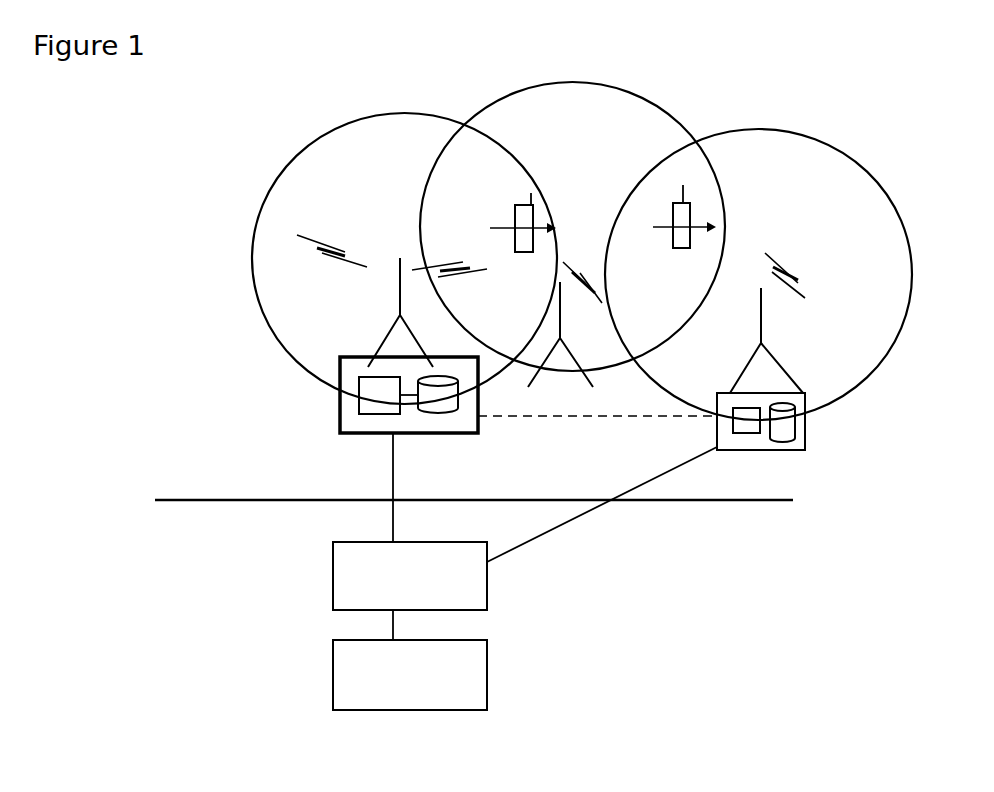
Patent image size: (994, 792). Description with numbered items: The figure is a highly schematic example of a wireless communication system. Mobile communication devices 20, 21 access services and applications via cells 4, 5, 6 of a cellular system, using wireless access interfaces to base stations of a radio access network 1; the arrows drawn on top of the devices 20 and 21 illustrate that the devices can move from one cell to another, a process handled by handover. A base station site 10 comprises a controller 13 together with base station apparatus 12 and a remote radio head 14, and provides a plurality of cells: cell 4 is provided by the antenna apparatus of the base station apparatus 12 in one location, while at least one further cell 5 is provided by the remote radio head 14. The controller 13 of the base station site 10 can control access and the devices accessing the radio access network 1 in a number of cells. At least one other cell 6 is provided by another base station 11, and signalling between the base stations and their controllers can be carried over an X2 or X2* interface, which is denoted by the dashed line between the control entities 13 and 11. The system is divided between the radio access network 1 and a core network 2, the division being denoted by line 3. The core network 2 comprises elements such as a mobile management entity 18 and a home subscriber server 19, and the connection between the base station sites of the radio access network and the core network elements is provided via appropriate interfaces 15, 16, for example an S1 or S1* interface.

The radio access network 1 is at (217, 228).
The core network 2 is at (768, 592).
The line 3 is at (793, 500).
The cell 4 is at (405, 198).
The cell 5 is at (590, 150).
The cell 6 is at (795, 190).
The base station site 10 is at (313, 350).
The base station 11 is at (805, 416).
The base station apparatus 12 is at (393, 310).
The controller 13 is at (338, 397).
The remote radio head 14 is at (478, 376).
The interface 15 is at (393, 483).
The interface 16 is at (542, 537).
The mobile management entity 18 is at (340, 587).
The home subscriber server 19 is at (340, 693).
The communication device 20 is at (510, 202).
The communication device 21 is at (675, 203).